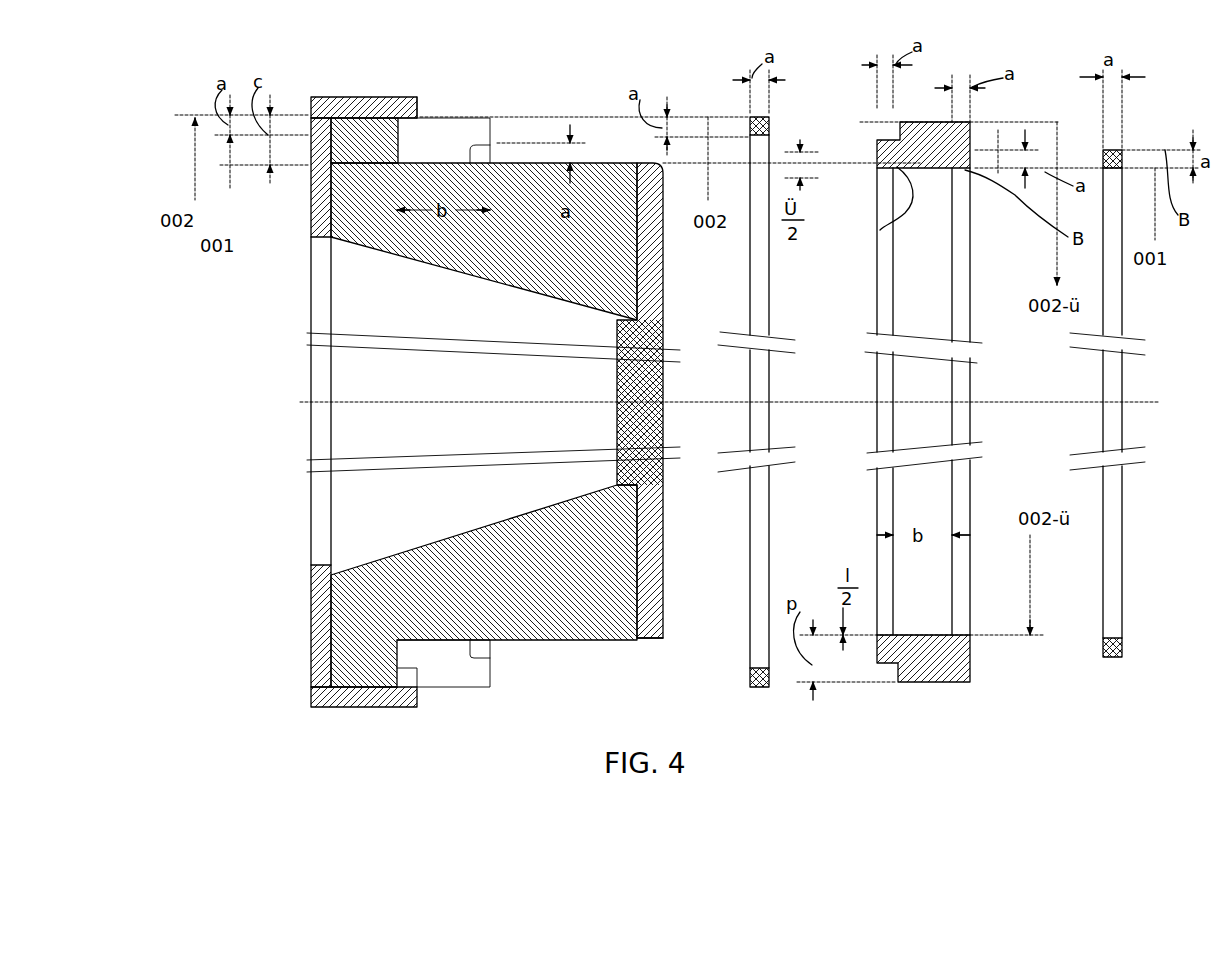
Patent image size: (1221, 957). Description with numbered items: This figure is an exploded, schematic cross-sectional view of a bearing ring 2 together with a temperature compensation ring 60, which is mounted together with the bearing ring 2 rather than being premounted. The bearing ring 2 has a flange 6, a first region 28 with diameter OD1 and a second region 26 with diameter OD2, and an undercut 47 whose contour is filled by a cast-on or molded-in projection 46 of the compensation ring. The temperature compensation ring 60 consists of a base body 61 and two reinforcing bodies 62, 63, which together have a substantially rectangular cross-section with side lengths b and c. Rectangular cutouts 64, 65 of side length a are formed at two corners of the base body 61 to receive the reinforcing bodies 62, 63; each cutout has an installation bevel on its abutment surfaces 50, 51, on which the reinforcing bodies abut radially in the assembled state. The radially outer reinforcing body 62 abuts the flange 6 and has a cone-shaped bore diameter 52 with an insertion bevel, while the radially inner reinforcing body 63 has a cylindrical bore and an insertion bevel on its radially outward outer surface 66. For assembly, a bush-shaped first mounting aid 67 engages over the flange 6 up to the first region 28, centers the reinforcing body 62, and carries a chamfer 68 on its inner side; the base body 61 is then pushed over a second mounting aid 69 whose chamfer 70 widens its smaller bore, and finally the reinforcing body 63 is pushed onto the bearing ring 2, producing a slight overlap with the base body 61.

The bearing ring 2 is at (370, 612).
The flange 6 is at (337, 113).
The second region 26 is at (311, 140).
The first region 28 is at (540, 172).
The projection 46 is at (887, 165).
The undercut 47 is at (362, 145).
The abutment surface 50 is at (958, 175).
The abutment surface 51 is at (878, 228).
The bore diameter 52 is at (755, 215).
The temperature compensation ring 60 is at (440, 135).
The base body 61 is at (927, 128).
The reinforcing body 62 is at (772, 120).
The reinforcing body 63 is at (1122, 152).
The rectangular cutout 64 is at (888, 130).
The rectangular cutout 65 is at (1000, 172).
The outer surface 66 is at (1116, 150).
The first mounting aid 67 is at (365, 690).
The chamfer 68 is at (420, 687).
The second mounting aid 69 is at (620, 640).
The chamfer 70 is at (655, 638).